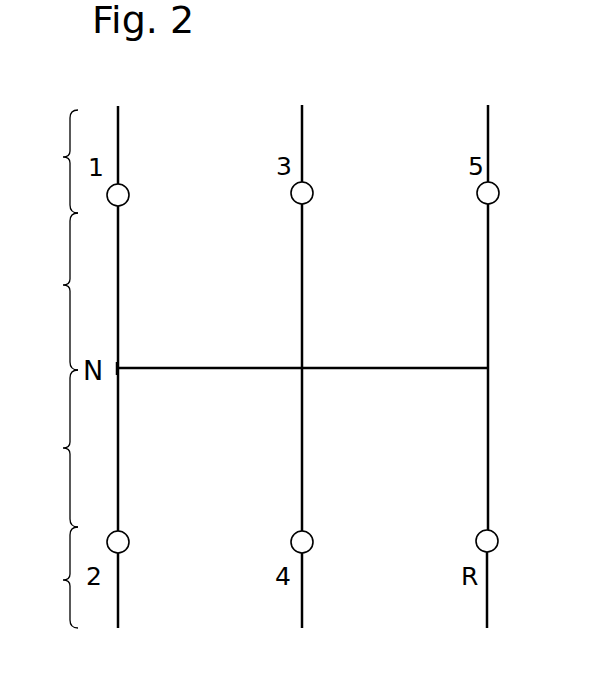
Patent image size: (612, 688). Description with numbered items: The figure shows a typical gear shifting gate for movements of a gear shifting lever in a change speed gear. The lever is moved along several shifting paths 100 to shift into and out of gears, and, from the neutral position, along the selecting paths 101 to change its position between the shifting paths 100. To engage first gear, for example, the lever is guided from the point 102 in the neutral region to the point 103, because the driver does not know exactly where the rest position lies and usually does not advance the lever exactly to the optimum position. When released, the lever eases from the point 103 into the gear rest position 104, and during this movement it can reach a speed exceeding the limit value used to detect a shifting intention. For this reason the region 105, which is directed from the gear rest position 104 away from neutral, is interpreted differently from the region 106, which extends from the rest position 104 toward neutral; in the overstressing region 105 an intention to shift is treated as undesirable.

The shifting paths 100 is at (118, 297).
The selecting paths 101 is at (197, 370).
The point 102 is at (116, 370).
The point 103 is at (118, 133).
The gear rest position 104 is at (118, 195).
The region of overstressing 105 is at (46, 369).
The region 106 is at (45, 370).